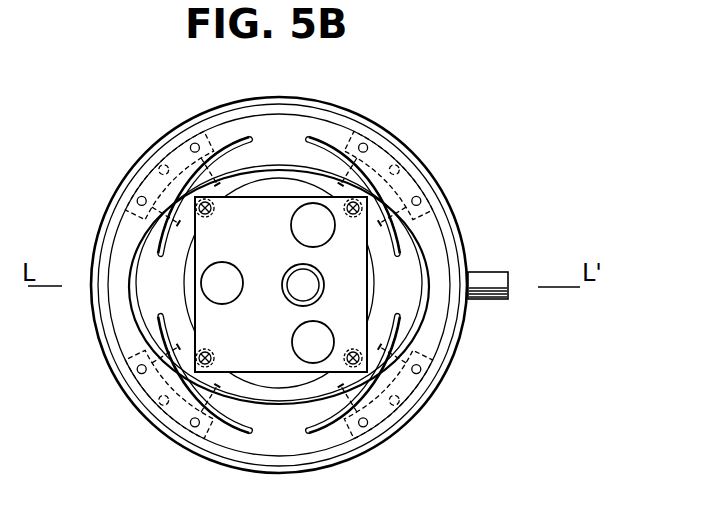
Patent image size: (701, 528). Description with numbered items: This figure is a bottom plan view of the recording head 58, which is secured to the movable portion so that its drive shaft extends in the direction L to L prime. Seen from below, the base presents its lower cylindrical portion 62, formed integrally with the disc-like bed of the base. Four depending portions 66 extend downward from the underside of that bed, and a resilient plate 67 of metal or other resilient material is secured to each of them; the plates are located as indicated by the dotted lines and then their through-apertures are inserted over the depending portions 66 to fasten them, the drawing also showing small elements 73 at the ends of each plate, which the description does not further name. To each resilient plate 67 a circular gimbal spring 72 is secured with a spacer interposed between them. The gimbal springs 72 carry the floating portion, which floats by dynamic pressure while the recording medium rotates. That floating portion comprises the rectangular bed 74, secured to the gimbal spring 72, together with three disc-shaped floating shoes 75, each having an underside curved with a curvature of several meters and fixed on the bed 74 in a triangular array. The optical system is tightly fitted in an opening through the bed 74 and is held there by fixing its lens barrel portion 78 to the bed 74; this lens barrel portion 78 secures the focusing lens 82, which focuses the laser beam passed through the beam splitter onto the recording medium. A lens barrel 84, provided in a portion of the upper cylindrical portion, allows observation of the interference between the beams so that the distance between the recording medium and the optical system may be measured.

The recording head 58 is at (457, 210).
The lower cylindrical portion 62 is at (461, 243).
The depending portion 66 is at (152, 152).
The resilient plate 67 is at (338, 151).
The gimbal spring 72 is at (305, 125).
The screw 73 is at (197, 142).
The bed 74 is at (277, 212).
The floating shoe 75 is at (228, 277).
The lens barrel portion 78 is at (320, 280).
The focusing lens 82 is at (298, 288).
The lens barrel 84 is at (495, 293).